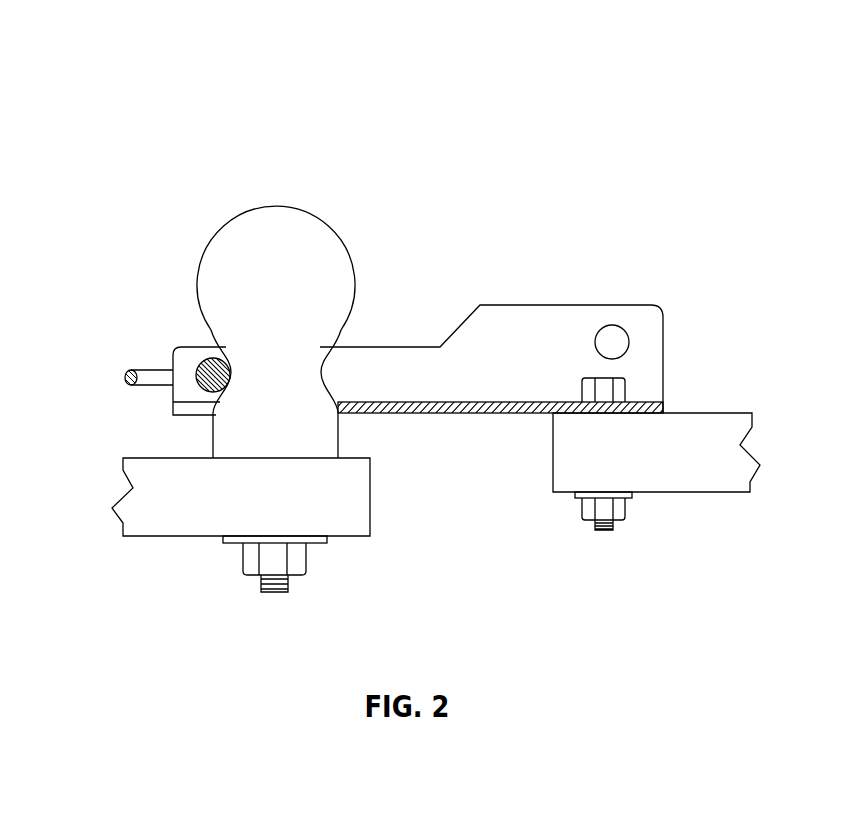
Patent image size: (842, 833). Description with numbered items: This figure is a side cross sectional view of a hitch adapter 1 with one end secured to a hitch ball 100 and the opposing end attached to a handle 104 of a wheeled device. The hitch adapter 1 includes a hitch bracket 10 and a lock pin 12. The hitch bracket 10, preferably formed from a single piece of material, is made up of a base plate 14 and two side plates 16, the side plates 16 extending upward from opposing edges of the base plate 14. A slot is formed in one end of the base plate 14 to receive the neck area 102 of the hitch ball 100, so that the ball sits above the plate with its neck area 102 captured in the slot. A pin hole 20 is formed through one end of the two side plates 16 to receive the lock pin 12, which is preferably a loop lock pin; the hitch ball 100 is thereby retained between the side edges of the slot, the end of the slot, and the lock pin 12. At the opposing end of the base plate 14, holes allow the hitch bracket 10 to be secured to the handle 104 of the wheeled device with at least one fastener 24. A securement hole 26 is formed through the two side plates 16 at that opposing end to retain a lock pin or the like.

The hitch adapter 1 is at (370, 122).
The hitch bracket 10 is at (463, 267).
The hitch ball 100 is at (287, 205).
The neck area 102 is at (320, 372).
The lock pin 12 is at (197, 382).
The pin hole 20 is at (200, 360).
The side plates 16 is at (527, 337).
The securement hole 26 is at (612, 325).
The base plate 14 is at (445, 413).
The handle 104 is at (688, 413).
The fastener 24 is at (615, 528).